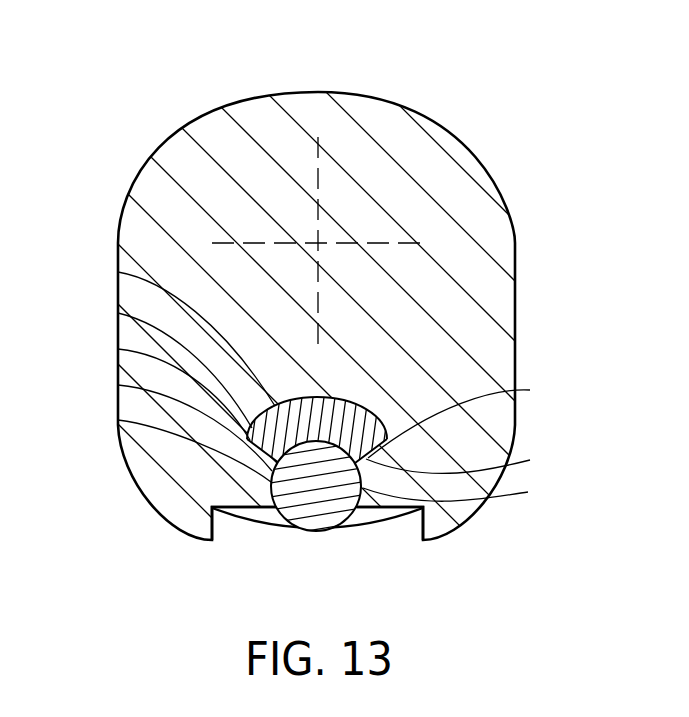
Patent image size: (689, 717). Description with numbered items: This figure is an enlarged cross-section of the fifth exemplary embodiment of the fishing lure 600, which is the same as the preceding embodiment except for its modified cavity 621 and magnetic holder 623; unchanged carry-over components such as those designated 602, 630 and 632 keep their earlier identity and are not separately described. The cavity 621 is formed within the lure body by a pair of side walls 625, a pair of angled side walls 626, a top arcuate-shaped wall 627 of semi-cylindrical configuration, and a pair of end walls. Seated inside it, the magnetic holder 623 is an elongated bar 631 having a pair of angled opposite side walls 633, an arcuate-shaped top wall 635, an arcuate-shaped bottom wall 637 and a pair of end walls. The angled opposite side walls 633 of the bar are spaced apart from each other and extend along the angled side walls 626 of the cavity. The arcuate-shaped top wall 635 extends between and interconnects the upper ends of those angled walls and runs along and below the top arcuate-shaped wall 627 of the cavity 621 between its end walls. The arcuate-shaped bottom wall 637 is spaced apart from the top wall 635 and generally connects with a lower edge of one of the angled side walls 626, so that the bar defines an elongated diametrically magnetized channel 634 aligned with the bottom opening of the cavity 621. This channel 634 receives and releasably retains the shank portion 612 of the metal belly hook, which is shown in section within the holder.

The fishing lure 600 is at (344, 358).
The encapsulant body 602 is at (137, 172).
The shank portion 612 is at (313, 533).
The cavity 621 is at (242, 532).
The magnetic holder 623 is at (385, 442).
The side walls 625 is at (118, 420).
The angled side walls 626 is at (118, 349).
The top arcuate-shaped wall 627 is at (367, 426).
The lens center axis 630 is at (373, 238).
The elongated bar 631 is at (118, 313).
The optical axis 632 is at (317, 200).
The angled opposite side walls 633 is at (118, 385).
The elongated diametrically magnetized channel 634 is at (315, 446).
The arcuate-shaped top wall 635 is at (118, 272).
The arcuate-shaped bottom wall 637 is at (333, 447).